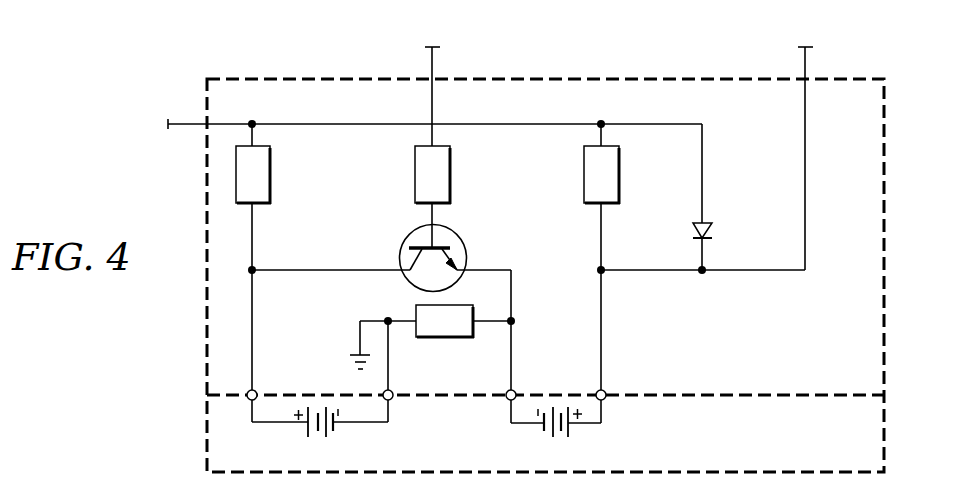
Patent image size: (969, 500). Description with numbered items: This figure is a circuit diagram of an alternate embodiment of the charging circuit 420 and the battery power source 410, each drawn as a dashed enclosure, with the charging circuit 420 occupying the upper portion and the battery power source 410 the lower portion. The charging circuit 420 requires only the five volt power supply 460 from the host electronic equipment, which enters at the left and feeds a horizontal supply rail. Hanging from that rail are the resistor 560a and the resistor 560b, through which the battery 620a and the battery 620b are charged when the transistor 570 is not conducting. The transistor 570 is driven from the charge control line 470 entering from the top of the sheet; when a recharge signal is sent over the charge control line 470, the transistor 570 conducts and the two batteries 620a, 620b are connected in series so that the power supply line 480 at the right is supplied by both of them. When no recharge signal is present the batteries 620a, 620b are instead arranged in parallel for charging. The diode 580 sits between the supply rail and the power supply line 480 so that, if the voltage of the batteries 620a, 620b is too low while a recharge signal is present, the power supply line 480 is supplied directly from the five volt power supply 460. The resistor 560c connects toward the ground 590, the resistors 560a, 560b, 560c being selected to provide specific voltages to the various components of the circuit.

The battery power source 410 is at (778, 462).
The charging circuit 420 is at (250, 78).
The 5 volt power supply 460 is at (188, 130).
The charge control line 470 is at (435, 68).
The power supply line 480 is at (800, 68).
The resistor 560a is at (272, 188).
The resistor 560b is at (452, 190).
The resistor 560c is at (434, 338).
The transistor 570 is at (400, 253).
The diode 580 is at (702, 220).
The ground 590 is at (350, 356).
The battery 620a is at (337, 432).
The battery 620b is at (573, 432).